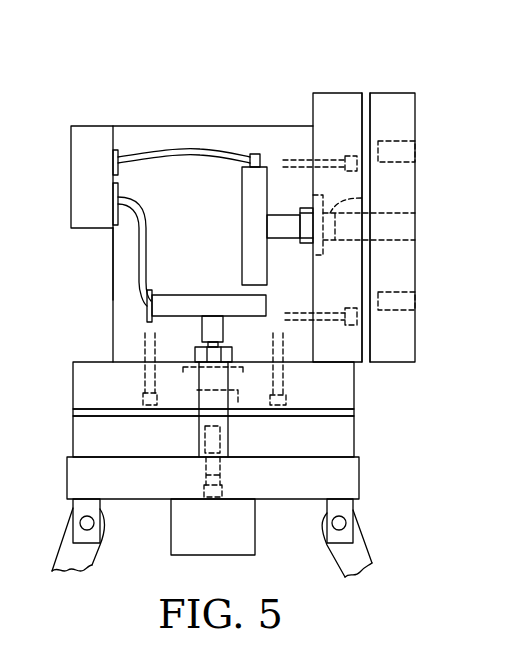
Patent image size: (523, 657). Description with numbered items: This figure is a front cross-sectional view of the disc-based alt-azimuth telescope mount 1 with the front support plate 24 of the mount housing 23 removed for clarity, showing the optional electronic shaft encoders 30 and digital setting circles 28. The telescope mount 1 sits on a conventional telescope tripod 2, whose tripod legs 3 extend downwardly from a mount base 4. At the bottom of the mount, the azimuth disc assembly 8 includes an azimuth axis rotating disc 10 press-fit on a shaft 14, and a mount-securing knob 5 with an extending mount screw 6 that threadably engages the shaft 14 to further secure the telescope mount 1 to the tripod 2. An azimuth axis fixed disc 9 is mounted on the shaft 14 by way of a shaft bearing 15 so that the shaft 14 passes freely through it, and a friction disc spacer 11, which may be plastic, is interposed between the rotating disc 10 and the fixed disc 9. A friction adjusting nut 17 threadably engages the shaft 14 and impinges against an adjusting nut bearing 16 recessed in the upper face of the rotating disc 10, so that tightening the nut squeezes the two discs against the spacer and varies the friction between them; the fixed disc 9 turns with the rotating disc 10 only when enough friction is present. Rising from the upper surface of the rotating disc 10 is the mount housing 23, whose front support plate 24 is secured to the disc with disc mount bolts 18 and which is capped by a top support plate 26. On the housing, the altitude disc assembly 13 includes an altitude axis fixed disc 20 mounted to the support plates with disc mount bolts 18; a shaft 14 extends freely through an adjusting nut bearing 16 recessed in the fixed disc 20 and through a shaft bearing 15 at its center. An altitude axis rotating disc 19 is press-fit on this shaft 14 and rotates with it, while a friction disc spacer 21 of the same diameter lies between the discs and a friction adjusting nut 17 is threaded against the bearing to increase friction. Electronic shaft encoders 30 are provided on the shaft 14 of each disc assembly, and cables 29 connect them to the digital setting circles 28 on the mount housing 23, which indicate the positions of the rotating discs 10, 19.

The telescope mount 1 is at (259, 78).
The telescope tripod 2 is at (370, 500).
The tripod legs 3 is at (365, 565).
The mount base 4 is at (358, 465).
The mount-securing knob 5 is at (250, 540).
The mount screw 6 is at (224, 470).
The azimuth disc assembly 8 is at (57, 349).
The azimuth axis fixed disc 9 is at (73, 437).
The azimuth axis rotating disc 10 is at (73, 383).
The friction disc spacer 11 is at (73, 412).
The altitude disc assembly 13 is at (426, 100).
The shaft 14 is at (385, 212).
The shaft bearing 15 is at (350, 248).
The adjusting nut bearing 16 is at (320, 190).
The friction adjusting nut 17 is at (305, 243).
The disc mount bolts 18 is at (297, 158).
The altitude axis rotating disc 19 is at (396, 93).
The altitude axis fixed disc 20 is at (330, 93).
The friction disc spacer 21 is at (366, 93).
The mount housing 23 is at (92, 246).
The front support plate 24 is at (111, 310).
The top support plate 26 is at (193, 125).
The digital setting circles 28 is at (89, 123).
The cables 29 is at (207, 160).
The electronic shaft encoders 30 is at (242, 228).